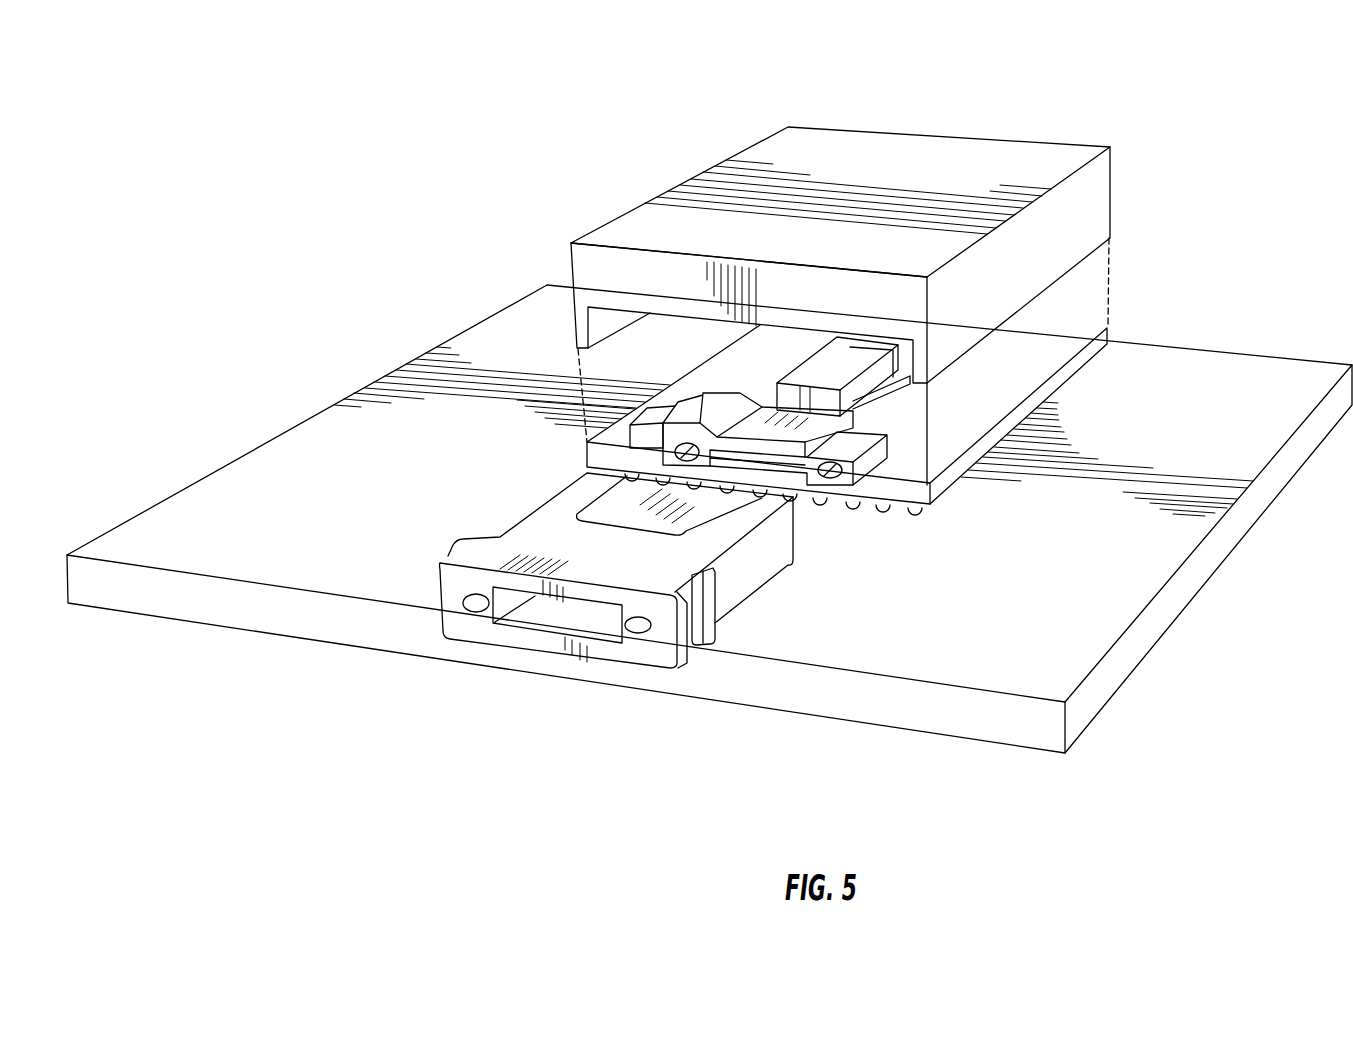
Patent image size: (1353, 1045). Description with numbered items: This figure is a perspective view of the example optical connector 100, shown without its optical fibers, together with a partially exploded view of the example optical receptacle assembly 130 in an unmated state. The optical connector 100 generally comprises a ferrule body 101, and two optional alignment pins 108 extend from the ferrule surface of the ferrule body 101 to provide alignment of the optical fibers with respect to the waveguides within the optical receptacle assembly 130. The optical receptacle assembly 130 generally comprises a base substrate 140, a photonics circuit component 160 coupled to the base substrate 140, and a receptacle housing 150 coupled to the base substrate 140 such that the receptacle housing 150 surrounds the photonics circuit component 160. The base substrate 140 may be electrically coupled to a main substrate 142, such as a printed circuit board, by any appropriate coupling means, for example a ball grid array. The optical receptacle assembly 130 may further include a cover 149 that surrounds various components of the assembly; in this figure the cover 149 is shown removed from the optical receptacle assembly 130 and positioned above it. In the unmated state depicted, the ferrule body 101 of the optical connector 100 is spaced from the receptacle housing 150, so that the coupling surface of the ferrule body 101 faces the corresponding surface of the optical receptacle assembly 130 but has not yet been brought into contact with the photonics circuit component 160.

The optical connector 100 is at (576, 633).
The ferrule body 101 is at (732, 577).
The alignment pins 108 is at (637, 633).
The optical receptacle assembly 130 is at (878, 420).
The base substrate 140 is at (1057, 340).
The main substrate 142 is at (527, 360).
The cover 149 is at (741, 152).
The receptacle housing 150 is at (722, 393).
The photonics circuit component 160 is at (793, 488).